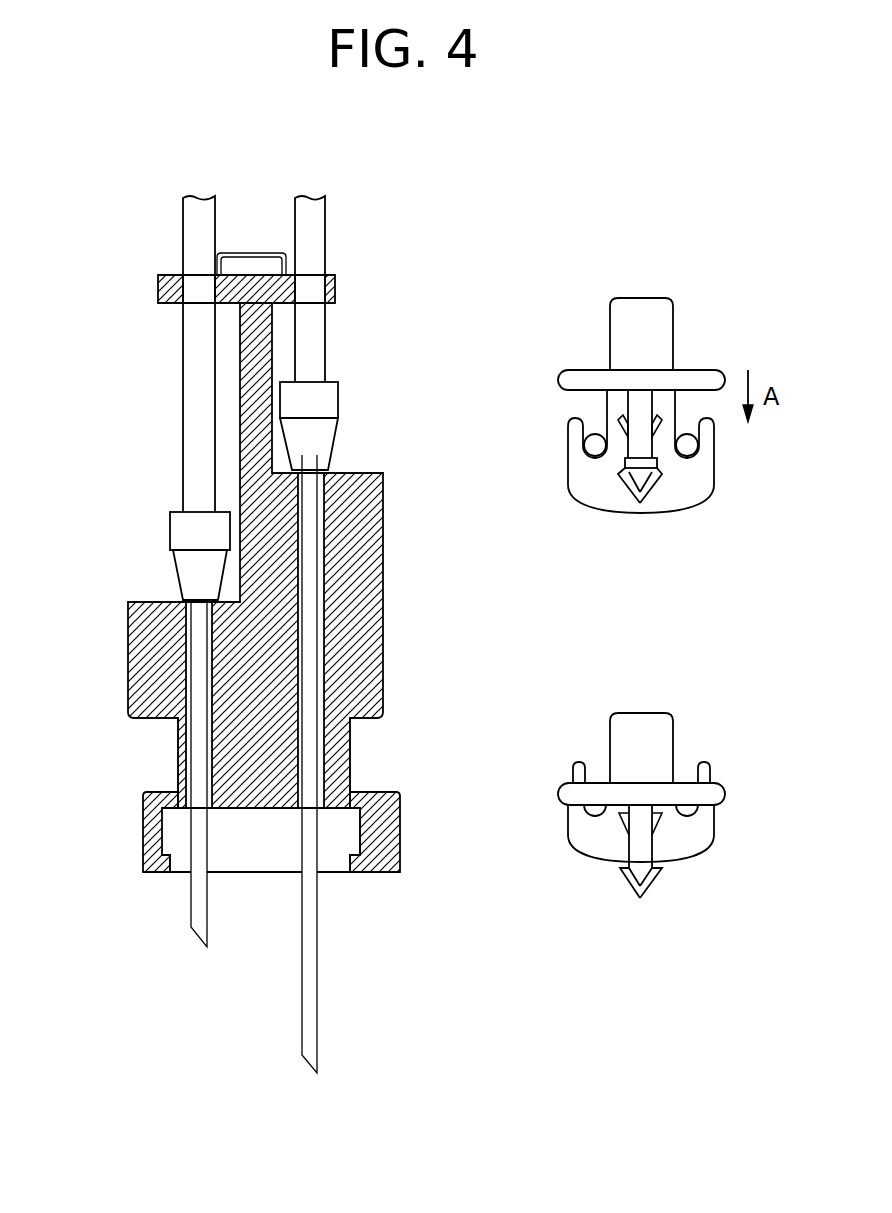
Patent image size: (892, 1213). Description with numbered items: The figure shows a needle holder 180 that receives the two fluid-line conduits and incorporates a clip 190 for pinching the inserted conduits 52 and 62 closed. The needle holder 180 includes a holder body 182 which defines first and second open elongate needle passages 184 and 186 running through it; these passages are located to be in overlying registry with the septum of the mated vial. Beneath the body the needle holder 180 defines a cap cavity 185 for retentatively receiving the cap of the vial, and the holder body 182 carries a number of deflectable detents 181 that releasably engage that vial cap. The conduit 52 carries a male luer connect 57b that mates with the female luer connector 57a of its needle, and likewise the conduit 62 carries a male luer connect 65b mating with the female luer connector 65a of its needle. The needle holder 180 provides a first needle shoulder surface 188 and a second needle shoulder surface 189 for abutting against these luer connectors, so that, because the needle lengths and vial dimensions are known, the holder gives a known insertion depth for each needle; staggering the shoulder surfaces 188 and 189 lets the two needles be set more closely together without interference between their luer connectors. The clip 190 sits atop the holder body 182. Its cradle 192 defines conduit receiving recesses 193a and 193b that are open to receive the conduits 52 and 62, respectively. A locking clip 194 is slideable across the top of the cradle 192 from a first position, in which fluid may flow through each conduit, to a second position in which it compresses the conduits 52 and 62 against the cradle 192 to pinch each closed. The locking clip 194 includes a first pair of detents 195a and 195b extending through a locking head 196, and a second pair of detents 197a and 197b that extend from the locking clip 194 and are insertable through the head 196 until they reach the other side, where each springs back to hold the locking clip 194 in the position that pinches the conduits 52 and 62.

The elongate hollow conduit 52 is at (190, 393).
The elongate hollow conduit 62 is at (325, 348).
The female luer connector 57a is at (180, 577).
The male luer connect 57b is at (170, 527).
The female luer connector 65a is at (335, 438).
The male luer connect 65b is at (340, 398).
The needle holder 180 is at (145, 815).
The deflectable detents 181 is at (355, 868).
The holder body 182 is at (148, 860).
The first needle passage 184 is at (178, 748).
The cap cavity 185 is at (265, 862).
The second needle passage 186 is at (333, 757).
The first needle shoulder surface 188 is at (138, 600).
The second needle shoulder surface 189 is at (373, 473).
The clip 190 is at (150, 268).
The cradle 192 is at (620, 513).
The conduit receiving recess 193a is at (595, 418).
The conduit receiving recess 193b is at (683, 405).
The locking clip 194 is at (563, 372).
The first detent 195a is at (620, 480).
The first detent 195b is at (662, 472).
The locking head 196 is at (660, 463).
The second detent 197a is at (618, 827).
The second detent 197b is at (660, 823).